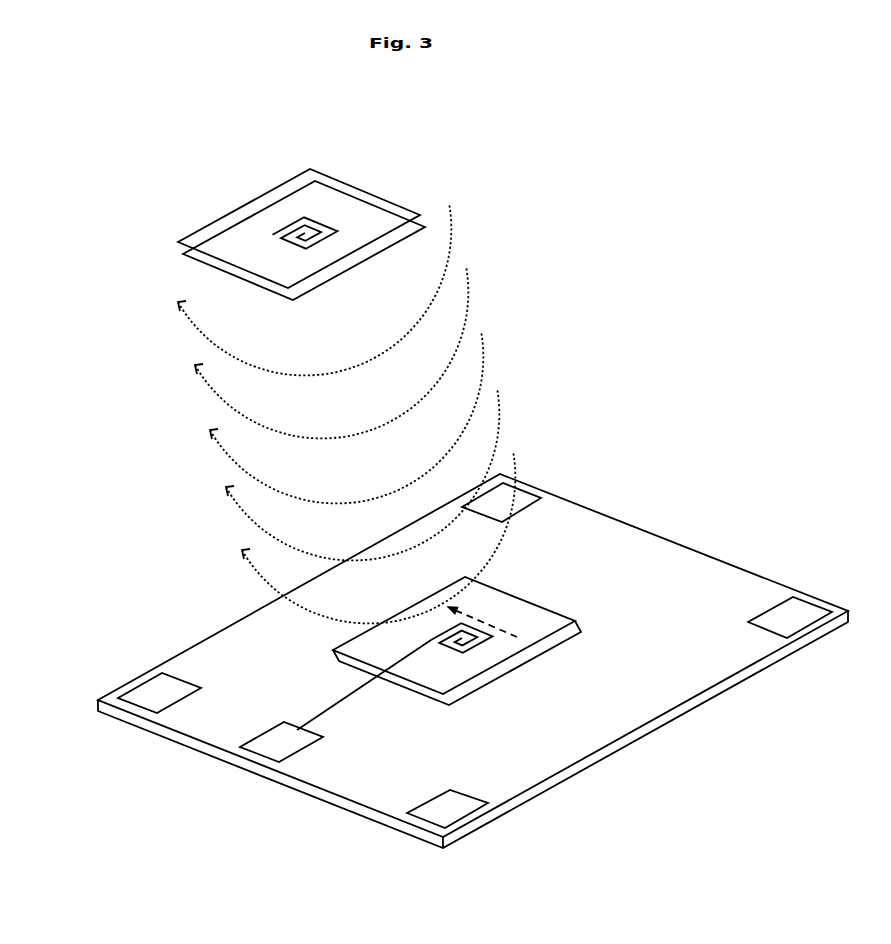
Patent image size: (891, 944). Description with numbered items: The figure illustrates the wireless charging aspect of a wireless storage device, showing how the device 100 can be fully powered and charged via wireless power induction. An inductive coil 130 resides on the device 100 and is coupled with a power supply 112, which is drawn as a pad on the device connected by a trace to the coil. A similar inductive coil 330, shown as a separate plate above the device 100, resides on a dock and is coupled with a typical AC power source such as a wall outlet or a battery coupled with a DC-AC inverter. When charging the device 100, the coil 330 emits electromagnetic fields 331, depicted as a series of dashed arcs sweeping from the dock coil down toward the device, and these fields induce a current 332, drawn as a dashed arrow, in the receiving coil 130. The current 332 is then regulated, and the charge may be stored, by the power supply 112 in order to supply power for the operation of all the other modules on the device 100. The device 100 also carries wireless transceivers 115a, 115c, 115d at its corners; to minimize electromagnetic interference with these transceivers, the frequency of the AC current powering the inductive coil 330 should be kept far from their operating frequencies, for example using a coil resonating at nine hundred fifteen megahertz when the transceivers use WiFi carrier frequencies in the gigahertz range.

The device 100 is at (660, 700).
The power supply 112 is at (270, 738).
The wireless transceiver 115a is at (132, 703).
The wireless transceiver 115c is at (530, 503).
The wireless transceiver 115d is at (812, 622).
The inductive coil 130 is at (472, 683).
The inductive coil 330 is at (327, 203).
The electromagnetic fields 331 is at (508, 375).
The current 332 is at (497, 628).